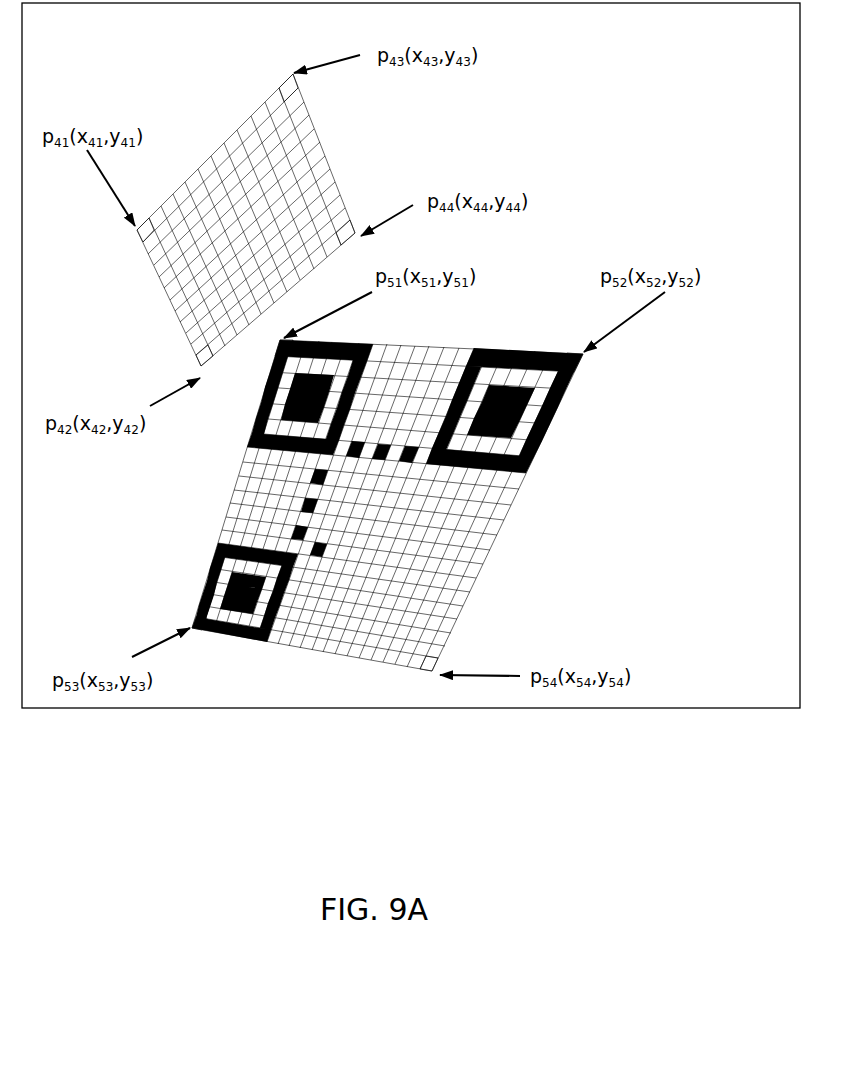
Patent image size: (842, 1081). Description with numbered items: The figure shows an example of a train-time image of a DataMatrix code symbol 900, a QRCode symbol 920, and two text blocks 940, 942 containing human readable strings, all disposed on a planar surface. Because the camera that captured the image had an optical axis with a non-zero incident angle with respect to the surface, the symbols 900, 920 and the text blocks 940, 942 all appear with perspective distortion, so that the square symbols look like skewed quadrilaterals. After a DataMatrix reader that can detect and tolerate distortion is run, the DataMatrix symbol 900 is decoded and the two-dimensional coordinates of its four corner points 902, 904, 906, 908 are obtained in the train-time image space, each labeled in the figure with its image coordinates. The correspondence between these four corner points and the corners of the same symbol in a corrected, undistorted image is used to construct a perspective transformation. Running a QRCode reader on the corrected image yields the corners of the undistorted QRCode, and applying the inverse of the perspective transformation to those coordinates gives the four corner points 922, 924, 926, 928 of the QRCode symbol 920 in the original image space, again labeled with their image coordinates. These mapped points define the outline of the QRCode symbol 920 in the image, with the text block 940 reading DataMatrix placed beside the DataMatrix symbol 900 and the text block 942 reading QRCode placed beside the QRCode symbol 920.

The DataMatrix code symbol 900 is at (195, 90).
The corner point of the DataMatrix symbol 902 is at (134, 236).
The corner point of the DataMatrix symbol 904 is at (198, 358).
The corner point of the DataMatrix symbol 906 is at (291, 72).
The corner point of the DataMatrix symbol 908 is at (356, 220).
The QRCode symbol 920 is at (588, 495).
The corner point of the QRCode symbol 922 is at (301, 342).
The corner point of the QRCode symbol 924 is at (586, 356).
The corner point of the QRCode symbol 926 is at (197, 638).
The corner point of the QRCode symbol 928 is at (440, 666).
The text block 940 is at (596, 104).
The text block 942 is at (142, 528).